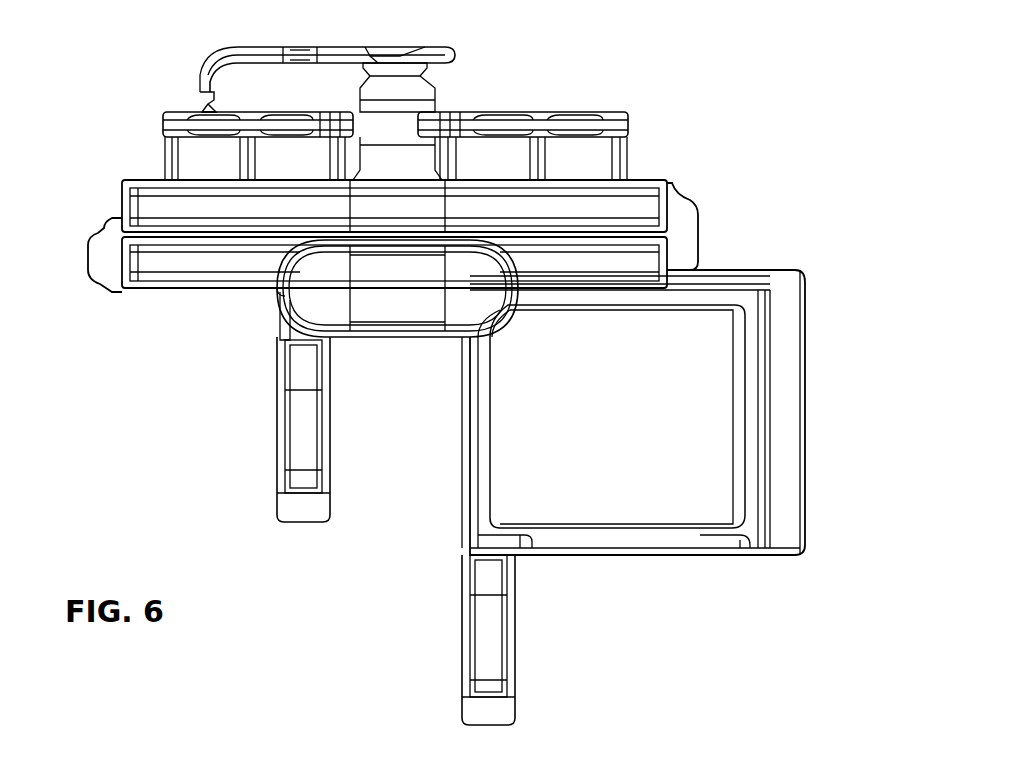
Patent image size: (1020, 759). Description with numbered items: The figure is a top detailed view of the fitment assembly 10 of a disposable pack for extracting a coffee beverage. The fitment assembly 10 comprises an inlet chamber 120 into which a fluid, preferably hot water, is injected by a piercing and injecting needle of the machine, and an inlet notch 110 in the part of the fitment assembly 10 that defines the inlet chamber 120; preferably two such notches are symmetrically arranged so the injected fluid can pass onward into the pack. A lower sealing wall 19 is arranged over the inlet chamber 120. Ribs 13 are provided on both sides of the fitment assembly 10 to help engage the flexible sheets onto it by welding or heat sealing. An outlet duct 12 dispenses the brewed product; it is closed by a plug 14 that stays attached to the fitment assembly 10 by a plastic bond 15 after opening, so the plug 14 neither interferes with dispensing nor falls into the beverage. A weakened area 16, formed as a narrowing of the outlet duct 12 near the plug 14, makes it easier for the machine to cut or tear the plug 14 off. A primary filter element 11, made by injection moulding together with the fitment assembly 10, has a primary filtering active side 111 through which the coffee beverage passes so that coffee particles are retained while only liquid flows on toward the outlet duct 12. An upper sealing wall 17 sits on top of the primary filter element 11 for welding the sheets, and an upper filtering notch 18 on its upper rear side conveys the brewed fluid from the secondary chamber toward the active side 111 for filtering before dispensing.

The fitment assembly 10 is at (760, 141).
The primary filter element 11 is at (752, 381).
The primary filtering active side 111 is at (718, 471).
The outlet duct 12 is at (405, 300).
The inlet chamber 120 is at (318, 312).
The inlet notch 110 is at (282, 300).
The ribs 13 is at (157, 242).
The plug 14 is at (432, 57).
The plastic bond 15 is at (200, 57).
The weakened area 16 is at (430, 72).
The upper sealing wall 17 is at (458, 640).
The upper filtering notch 18 is at (722, 547).
The lower sealing wall 19 is at (274, 455).